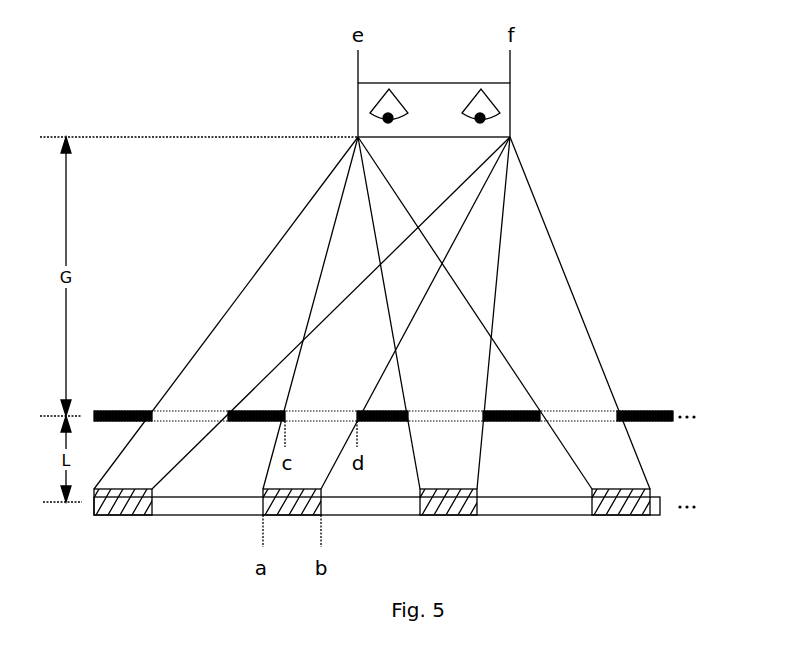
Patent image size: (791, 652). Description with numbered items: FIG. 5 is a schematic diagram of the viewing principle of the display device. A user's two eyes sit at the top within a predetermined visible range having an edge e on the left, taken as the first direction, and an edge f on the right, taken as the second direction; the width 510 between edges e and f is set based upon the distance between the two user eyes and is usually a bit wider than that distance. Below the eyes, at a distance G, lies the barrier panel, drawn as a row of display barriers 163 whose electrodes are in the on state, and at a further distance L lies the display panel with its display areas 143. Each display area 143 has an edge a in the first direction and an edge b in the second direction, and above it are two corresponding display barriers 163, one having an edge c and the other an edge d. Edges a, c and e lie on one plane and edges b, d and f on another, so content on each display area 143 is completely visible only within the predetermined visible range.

The width of the predetermined visible range 510 is at (434, 90).
The display barrier 163 is at (645, 411).
The display area 143 is at (650, 489).